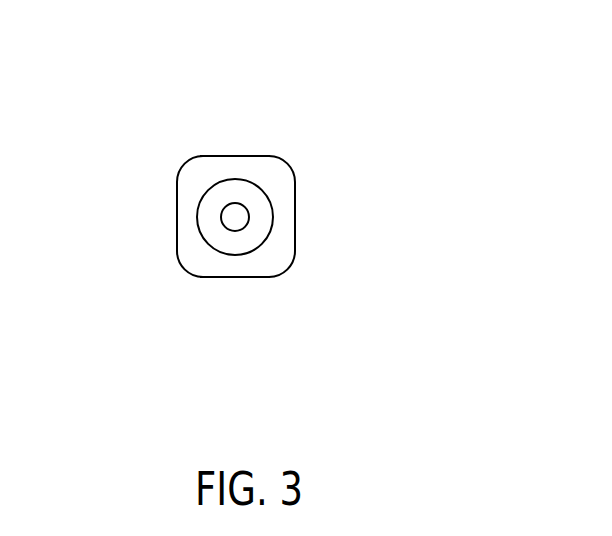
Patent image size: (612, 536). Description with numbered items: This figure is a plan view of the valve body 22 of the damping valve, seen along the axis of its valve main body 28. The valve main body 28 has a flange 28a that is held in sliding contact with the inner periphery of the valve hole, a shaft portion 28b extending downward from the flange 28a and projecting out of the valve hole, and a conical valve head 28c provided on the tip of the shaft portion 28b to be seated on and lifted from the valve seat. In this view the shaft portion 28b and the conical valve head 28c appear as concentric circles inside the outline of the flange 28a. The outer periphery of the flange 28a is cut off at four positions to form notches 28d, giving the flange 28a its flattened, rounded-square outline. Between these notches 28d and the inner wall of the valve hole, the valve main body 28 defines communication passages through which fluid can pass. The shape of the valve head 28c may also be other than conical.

The valve body 22 is at (165, 155).
The valve main body 28 is at (188, 266).
The flange 28a is at (283, 176).
The shaft portion 28b is at (274, 217).
The conical valve head 28c is at (243, 192).
The notches 28d is at (231, 156).